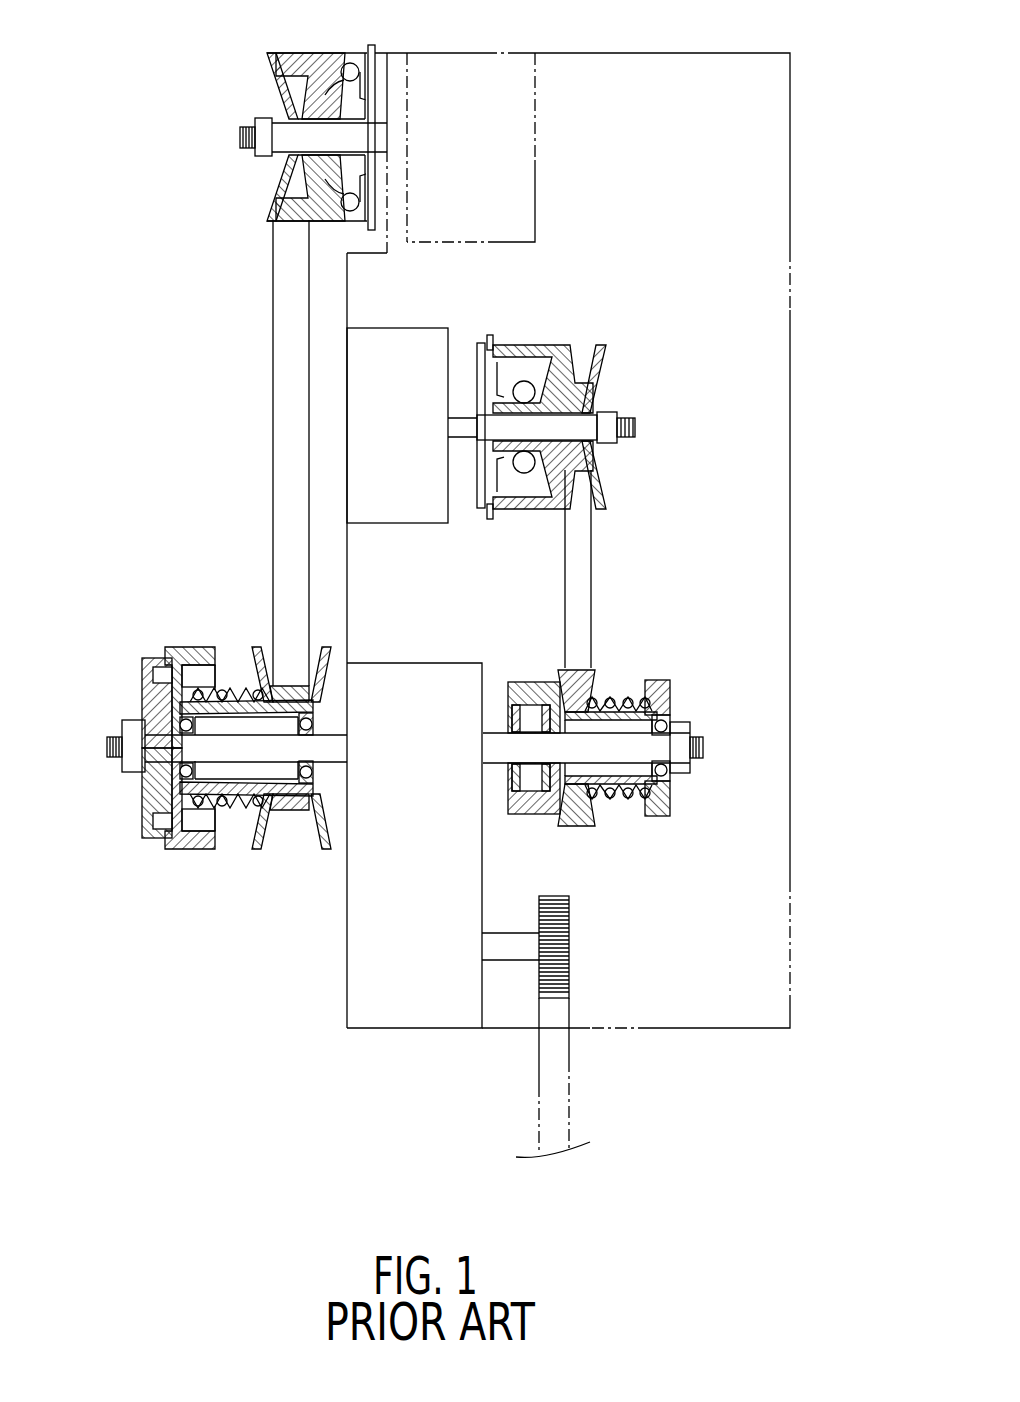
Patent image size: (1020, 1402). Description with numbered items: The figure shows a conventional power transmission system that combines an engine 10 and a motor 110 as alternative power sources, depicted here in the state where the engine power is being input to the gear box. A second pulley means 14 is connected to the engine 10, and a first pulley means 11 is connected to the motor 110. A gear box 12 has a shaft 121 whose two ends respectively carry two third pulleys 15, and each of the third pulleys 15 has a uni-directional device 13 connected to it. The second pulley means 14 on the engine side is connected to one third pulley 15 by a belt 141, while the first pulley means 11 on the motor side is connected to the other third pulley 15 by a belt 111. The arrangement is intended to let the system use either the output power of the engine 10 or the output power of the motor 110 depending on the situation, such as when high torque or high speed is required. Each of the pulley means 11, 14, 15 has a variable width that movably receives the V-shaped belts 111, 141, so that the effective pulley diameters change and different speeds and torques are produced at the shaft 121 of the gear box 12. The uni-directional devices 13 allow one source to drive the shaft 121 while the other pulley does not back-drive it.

The engine 10 is at (490, 51).
The second pulley means 14 is at (320, 53).
The belt 141 is at (272, 428).
The motor 110 is at (410, 340).
The first pulley means 11 is at (546, 341).
The belt 111 is at (582, 598).
The uni-directional device 13 is at (160, 668).
The third pulleys 15 is at (207, 660).
The gear box 12 is at (378, 1022).
The shaft 121 is at (496, 762).